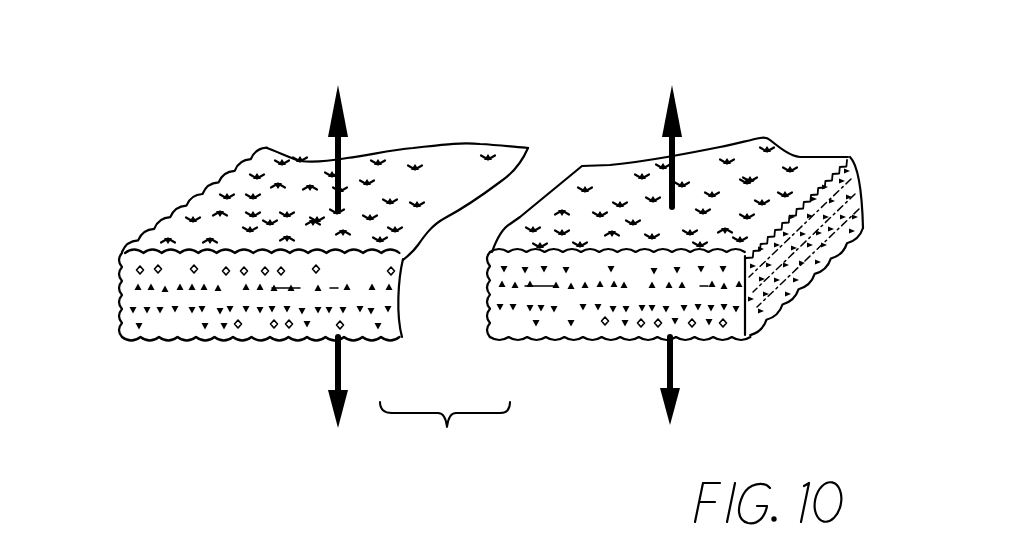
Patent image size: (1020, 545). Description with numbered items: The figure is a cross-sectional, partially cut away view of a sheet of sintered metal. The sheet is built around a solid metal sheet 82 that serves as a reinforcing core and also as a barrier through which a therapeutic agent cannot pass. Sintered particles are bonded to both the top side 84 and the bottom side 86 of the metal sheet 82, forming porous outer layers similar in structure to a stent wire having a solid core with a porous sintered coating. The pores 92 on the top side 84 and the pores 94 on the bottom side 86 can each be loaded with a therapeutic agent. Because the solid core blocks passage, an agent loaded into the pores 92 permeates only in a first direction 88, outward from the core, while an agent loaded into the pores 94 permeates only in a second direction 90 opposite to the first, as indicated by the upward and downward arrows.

The metal sheet 82 is at (120, 298).
The top side 84 is at (126, 248).
The bottom side 86 is at (122, 330).
The first direction 88 is at (345, 142).
The second direction 90 is at (335, 362).
The pores on the top side 92 is at (450, 181).
The pores on the bottom side 94 is at (208, 323).